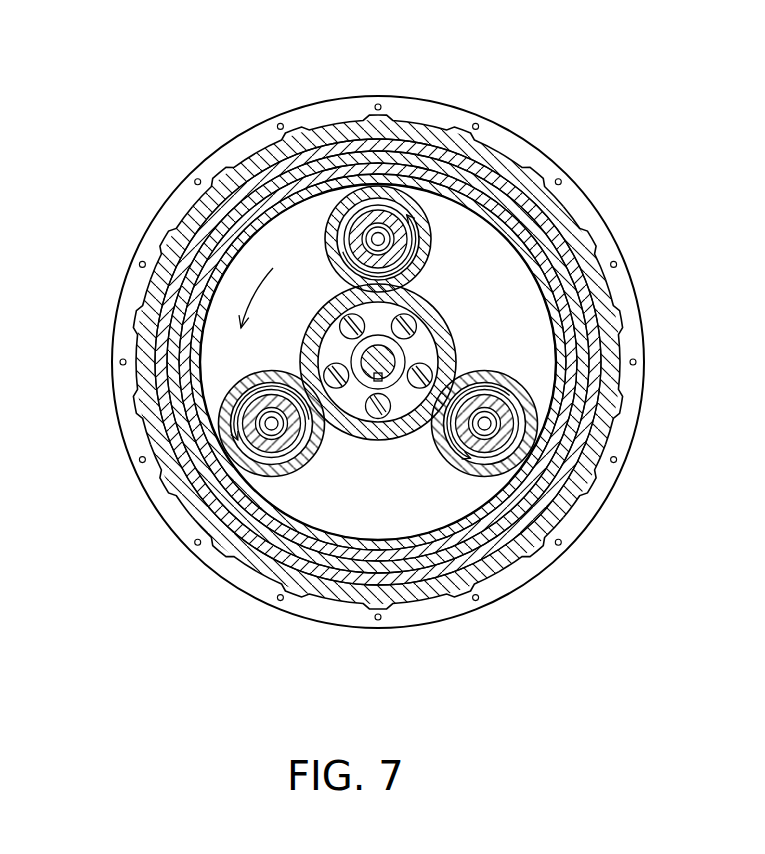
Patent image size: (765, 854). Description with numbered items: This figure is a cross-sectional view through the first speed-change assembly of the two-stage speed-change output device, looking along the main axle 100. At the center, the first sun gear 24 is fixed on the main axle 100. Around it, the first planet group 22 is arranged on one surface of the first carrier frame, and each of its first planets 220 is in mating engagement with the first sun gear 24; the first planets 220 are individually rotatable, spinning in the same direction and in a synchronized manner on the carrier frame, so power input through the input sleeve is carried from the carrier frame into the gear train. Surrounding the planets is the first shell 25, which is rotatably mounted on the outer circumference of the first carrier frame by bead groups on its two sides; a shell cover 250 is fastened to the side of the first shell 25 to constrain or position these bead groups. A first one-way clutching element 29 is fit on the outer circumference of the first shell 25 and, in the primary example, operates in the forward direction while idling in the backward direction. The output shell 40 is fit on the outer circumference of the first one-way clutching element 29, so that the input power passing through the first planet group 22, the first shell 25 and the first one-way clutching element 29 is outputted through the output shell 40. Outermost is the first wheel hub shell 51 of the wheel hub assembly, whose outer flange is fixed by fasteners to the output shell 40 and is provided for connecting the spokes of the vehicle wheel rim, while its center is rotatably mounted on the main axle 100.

The first planet group 22 is at (310, 213).
The first sun gear 24 is at (188, 272).
The first shell 25 is at (185, 328).
The first one-way clutching element 29 is at (193, 275).
The output shell 40 is at (550, 230).
The first wheel hub shell 51 is at (418, 130).
The main axle 100 is at (392, 360).
The first planets 220 is at (350, 228).
The shell cover 250 is at (195, 389).